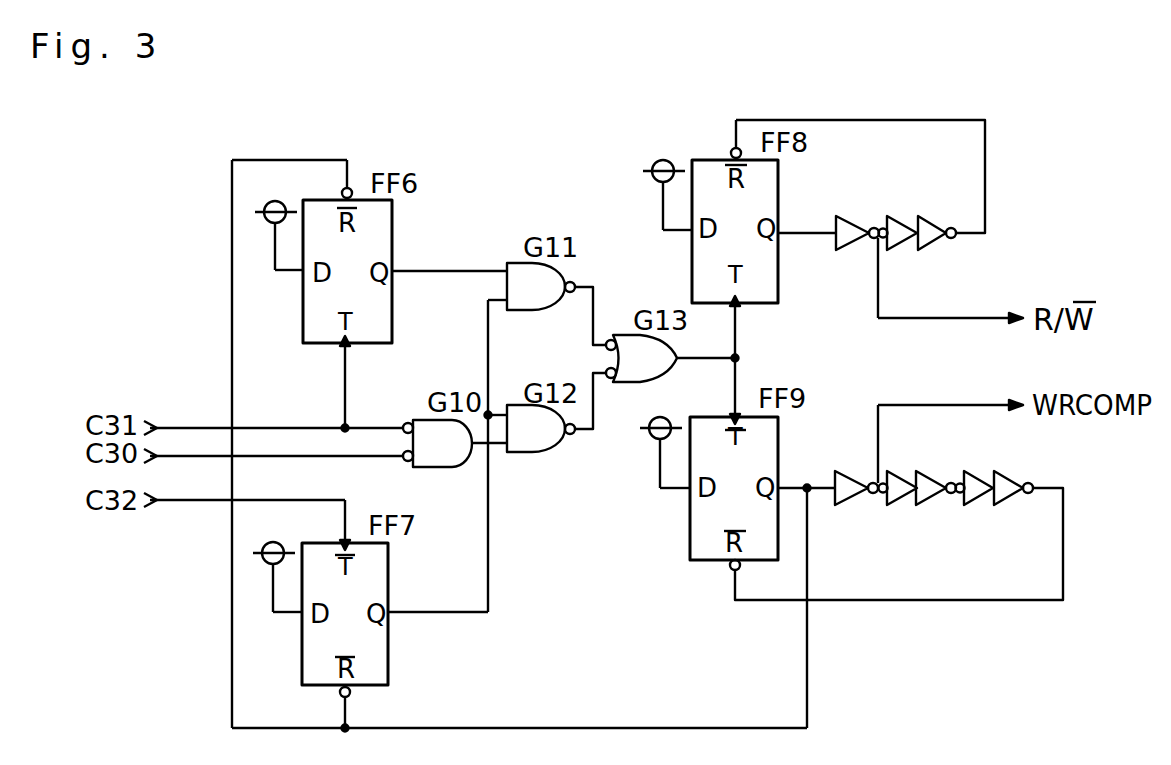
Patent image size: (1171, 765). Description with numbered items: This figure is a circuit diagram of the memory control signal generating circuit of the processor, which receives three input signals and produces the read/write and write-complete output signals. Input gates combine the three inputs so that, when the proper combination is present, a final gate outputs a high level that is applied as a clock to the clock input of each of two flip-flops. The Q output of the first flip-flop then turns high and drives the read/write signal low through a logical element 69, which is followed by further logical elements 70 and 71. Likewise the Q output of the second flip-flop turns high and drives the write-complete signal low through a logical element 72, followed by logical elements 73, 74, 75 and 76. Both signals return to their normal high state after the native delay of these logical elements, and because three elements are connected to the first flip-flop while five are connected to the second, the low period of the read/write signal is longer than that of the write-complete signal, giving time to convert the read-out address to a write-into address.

The logical element 69 is at (855, 218).
The logical element 70 is at (900, 218).
The logical element 71 is at (934, 218).
The logical element 72 is at (850, 505).
The logical element 73 is at (903, 472).
The logical element 74 is at (930, 505).
The logical element 75 is at (980, 472).
The logical element 76 is at (1010, 505).